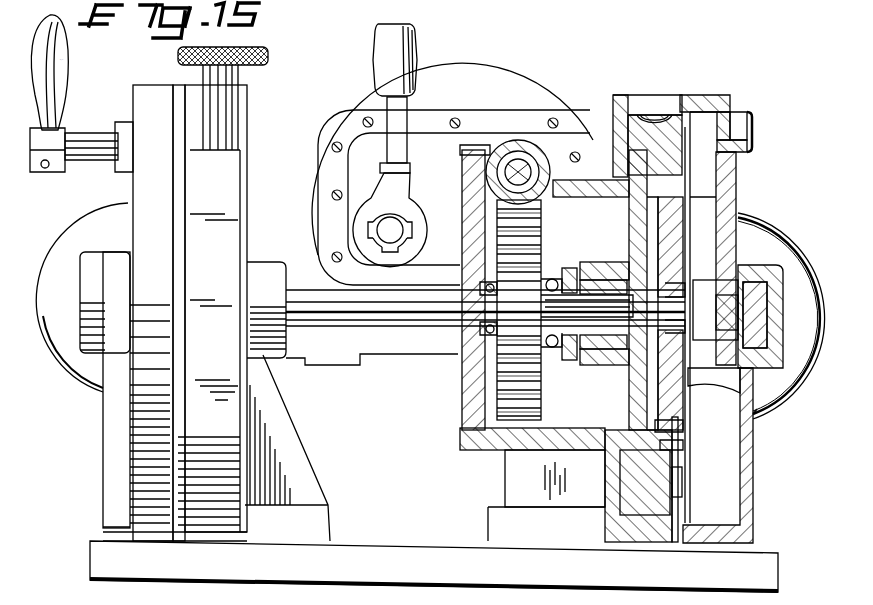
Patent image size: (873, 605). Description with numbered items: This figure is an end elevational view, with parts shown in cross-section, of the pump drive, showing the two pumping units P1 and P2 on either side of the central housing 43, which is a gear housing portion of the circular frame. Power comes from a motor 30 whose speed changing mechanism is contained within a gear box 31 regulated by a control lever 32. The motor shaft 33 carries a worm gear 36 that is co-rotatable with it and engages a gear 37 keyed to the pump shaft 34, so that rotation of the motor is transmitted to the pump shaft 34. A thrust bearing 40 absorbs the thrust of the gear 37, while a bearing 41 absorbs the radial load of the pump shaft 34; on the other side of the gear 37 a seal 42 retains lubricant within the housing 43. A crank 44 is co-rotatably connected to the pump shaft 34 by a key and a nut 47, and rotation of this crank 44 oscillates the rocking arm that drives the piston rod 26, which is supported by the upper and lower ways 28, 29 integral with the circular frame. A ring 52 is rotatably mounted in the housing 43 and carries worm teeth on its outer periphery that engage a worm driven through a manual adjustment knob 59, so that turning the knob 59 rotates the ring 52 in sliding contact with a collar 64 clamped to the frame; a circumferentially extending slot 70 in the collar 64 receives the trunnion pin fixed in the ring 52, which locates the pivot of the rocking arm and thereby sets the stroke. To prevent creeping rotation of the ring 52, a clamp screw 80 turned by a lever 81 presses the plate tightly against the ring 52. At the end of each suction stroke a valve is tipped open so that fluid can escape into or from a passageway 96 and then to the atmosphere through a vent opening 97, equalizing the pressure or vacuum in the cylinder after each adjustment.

The piston rod 26 is at (760, 325).
The upper way 28 is at (774, 266).
The lower way 29 is at (760, 404).
The motor 30 is at (532, 70).
The gear box 31 is at (428, 128).
The control lever 32 is at (418, 50).
The motor shaft 33 is at (520, 172).
The pump shaft 34 is at (397, 317).
The worm gear 36 is at (520, 157).
The gear 37 is at (540, 240).
The thrust bearing 40 is at (555, 347).
The bearing 41 is at (608, 280).
The seal 42 is at (478, 337).
The housing 43 is at (503, 453).
The crank 44 is at (672, 222).
The nut 47 is at (700, 283).
The ring 52 is at (636, 120).
The manual adjustment knob 59 is at (268, 52).
The collar 64 is at (703, 108).
The circumferentially extending slot 70 is at (684, 470).
The clamp screw 80 is at (88, 135).
The lever 81 is at (70, 60).
The passageway 96 is at (703, 177).
The vent opening 97 is at (733, 122).
The pumping unit P1 is at (790, 222).
The pumping unit P2 is at (48, 236).